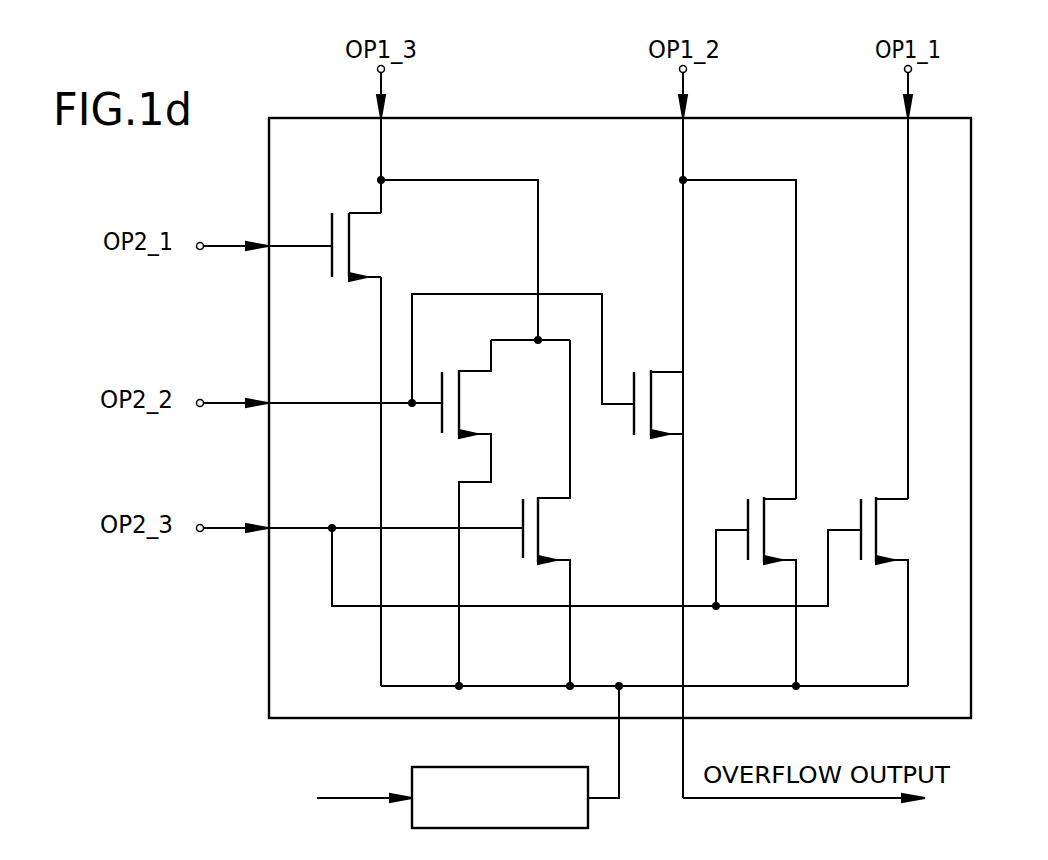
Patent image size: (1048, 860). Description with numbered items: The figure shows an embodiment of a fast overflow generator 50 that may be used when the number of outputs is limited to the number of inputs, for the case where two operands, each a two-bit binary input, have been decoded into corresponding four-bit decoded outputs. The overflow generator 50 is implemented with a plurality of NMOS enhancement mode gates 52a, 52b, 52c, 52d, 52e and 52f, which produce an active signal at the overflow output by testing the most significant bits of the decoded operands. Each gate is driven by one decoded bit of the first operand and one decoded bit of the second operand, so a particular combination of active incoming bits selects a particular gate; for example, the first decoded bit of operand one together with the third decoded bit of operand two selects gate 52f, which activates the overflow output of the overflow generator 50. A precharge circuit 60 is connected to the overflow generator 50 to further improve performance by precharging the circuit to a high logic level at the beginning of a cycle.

The fast overflow generator 50 is at (972, 345).
The NMOS enhancement mode gate 52a is at (367, 265).
The NMOS enhancement mode gate 52b is at (477, 422).
The NMOS enhancement mode gate 52c is at (557, 548).
The NMOS enhancement mode gate 52d is at (670, 423).
The NMOS enhancement mode gate 52e is at (783, 548).
The NMOS enhancement mode gate 52f is at (893, 552).
The precharge circuit 60 is at (487, 828).